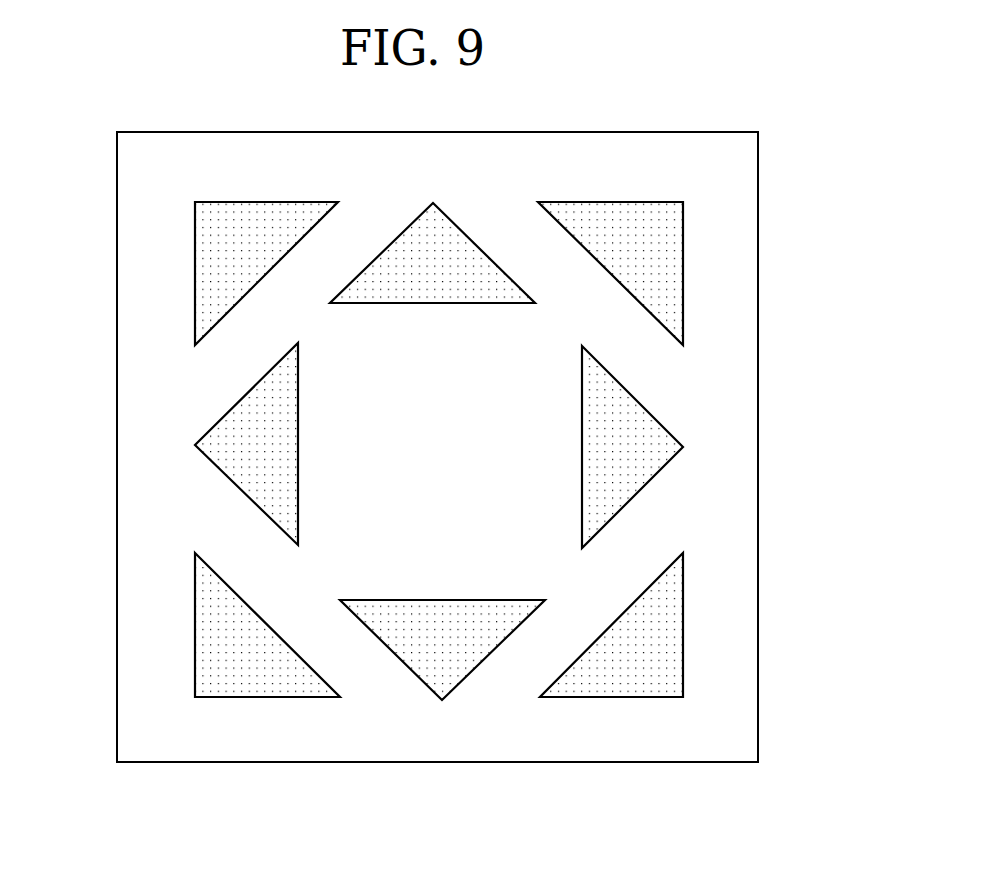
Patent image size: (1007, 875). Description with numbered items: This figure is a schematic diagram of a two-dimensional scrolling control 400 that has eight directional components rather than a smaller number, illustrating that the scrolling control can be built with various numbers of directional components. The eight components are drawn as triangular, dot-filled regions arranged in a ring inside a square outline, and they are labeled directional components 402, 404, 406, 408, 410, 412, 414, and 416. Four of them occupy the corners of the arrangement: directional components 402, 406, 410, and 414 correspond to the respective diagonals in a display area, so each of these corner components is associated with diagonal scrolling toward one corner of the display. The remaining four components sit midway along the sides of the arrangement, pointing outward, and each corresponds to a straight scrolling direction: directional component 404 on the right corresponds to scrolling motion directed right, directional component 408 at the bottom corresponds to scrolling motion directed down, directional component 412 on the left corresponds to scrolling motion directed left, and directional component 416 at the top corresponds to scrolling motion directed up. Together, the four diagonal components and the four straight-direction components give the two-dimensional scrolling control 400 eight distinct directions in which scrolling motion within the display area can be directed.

The two-dimensional scrolling control 400 is at (695, 97).
The directional component 402 is at (667, 272).
The directional component 404 is at (652, 447).
The directional component 406 is at (632, 640).
The directional component 408 is at (453, 638).
The directional component 410 is at (258, 672).
The directional component 412 is at (230, 447).
The directional component 414 is at (217, 253).
The directional component 416 is at (420, 242).